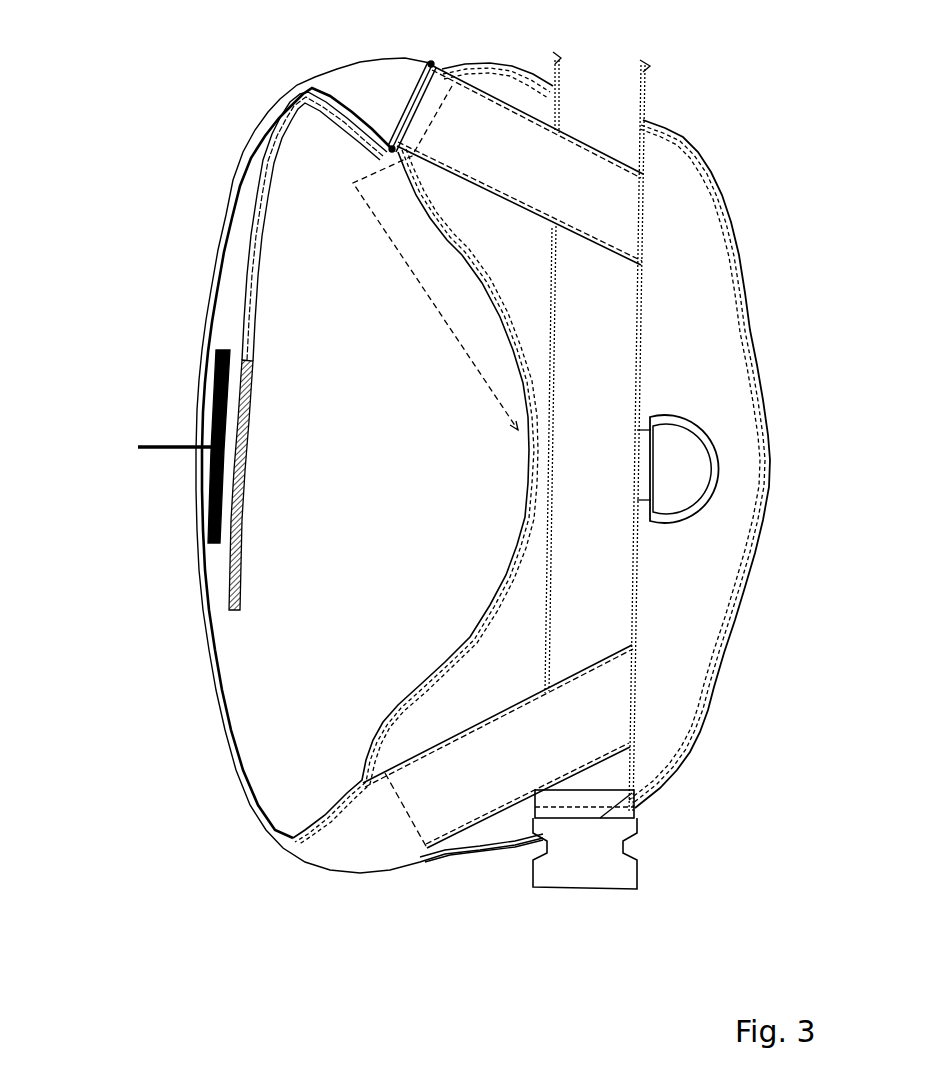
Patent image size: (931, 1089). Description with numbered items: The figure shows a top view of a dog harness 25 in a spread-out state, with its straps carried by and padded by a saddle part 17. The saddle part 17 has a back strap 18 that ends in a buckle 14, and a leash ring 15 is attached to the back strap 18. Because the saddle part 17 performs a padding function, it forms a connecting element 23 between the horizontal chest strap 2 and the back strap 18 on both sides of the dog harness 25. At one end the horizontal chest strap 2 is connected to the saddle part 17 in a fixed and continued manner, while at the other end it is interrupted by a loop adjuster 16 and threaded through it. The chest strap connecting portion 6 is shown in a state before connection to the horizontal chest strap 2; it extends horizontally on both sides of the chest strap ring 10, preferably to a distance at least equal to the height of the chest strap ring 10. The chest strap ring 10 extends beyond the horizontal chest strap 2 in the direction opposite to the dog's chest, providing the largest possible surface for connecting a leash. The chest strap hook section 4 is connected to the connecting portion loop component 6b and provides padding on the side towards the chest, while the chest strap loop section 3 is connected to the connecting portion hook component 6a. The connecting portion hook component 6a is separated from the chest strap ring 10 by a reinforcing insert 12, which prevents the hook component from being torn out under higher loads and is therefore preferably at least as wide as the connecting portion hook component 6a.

The horizontal chest strap 2 is at (344, 484).
The chest strap loop section 3 is at (374, 465).
The chest strap hook section 4 is at (314, 226).
The chest strap connecting portion 6 is at (282, 449).
The connecting portion hook component 6a is at (182, 415).
The connecting portion loop component 6b is at (267, 485).
The chest strap ring 10 is at (176, 464).
The reinforcing insert 12 is at (240, 602).
The buckle 14 is at (612, 839).
The leash ring 15 is at (678, 447).
The loop adjuster 16 is at (432, 85).
The saddle part 17 is at (724, 464).
The back strap 18 is at (707, 436).
The connecting element 23 is at (435, 258).
The dog harness 25 is at (702, 440).